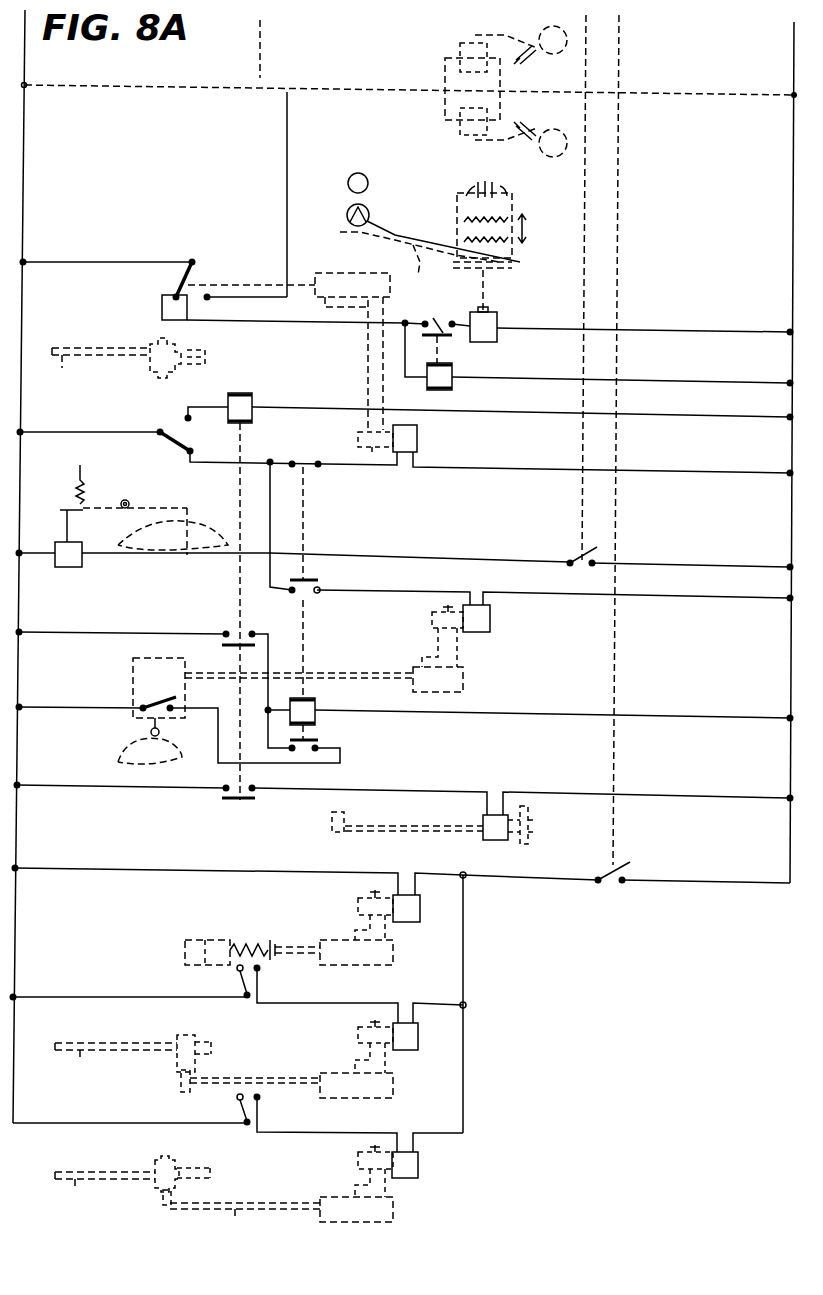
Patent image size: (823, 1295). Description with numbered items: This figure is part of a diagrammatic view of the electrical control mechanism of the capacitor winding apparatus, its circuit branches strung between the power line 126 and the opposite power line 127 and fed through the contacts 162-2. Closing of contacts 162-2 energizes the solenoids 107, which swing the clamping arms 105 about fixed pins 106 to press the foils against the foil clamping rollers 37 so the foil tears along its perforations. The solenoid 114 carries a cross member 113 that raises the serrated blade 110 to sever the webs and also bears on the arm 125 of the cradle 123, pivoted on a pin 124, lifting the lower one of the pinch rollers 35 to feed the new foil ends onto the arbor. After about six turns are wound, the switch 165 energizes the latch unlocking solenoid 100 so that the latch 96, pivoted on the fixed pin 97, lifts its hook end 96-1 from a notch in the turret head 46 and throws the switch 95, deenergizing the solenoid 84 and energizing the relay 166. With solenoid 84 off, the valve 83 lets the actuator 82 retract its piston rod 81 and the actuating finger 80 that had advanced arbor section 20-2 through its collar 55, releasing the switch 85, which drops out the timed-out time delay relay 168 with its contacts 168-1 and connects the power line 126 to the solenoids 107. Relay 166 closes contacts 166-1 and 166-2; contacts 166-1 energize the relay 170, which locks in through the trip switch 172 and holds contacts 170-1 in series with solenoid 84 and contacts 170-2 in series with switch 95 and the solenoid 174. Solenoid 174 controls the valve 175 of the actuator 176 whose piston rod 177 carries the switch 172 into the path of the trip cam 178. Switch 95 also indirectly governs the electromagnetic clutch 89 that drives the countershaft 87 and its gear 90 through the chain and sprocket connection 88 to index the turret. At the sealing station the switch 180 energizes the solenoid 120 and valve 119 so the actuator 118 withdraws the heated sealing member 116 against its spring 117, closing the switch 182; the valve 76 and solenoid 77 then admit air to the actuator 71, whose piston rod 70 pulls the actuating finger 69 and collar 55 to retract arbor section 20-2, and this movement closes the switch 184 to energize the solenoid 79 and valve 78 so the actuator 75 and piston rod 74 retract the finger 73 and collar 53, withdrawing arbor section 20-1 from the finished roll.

The power line 126 is at (25, 72).
The power supply line 127 is at (794, 50).
The contacts 162-2 is at (270, 78).
The solenoids 107 is at (460, 56).
The fixed pins 106 is at (512, 32).
The clamping arms 105 is at (537, 93).
The foil clamping rollers 37 is at (567, 42).
The pinch rollers 35 is at (368, 183).
The pin 124 is at (345, 222).
The cradle 123 is at (355, 236).
The arm 125 is at (434, 272).
The blade 110 is at (510, 253).
The cross member 113 is at (500, 270).
The solenoid 114 is at (497, 317).
The time delay contact 168-1 is at (434, 329).
The time delay relay 168 is at (452, 380).
The switch 85 is at (178, 282).
The actuating finger 80 is at (187, 309).
The piston rod 81 is at (268, 284).
The actuator 82 is at (346, 273).
The arbor section 20-2 is at (82, 347).
The arbor section 20-1 is at (72, 1192).
The collar 53 is at (148, 374).
The collar 55 is at (200, 373).
The relay 166 is at (254, 402).
The switch 95 is at (188, 446).
The valve 83 is at (358, 438).
The solenoid 84 is at (417, 440).
The contacts 170-1 is at (318, 470).
The latch 96 is at (100, 506).
The fixed pin 97 is at (132, 505).
The turret head 46 is at (213, 527).
The latch unlocking solenoid 100 is at (70, 567).
The hook end 96-1 is at (197, 547).
The switch 165 is at (572, 560).
The contacts 170-2 is at (313, 576).
The solenoid 174 is at (490, 620).
The valve 175 is at (432, 620).
The actuator 176 is at (463, 685).
The piston rod 177 is at (325, 676).
The trip switch 172 is at (143, 700).
The trip cam 178 is at (140, 738).
The relay 170 is at (315, 720).
The contacts 166-1 is at (238, 630).
The contacts 166-2 is at (244, 803).
The countershaft 87 is at (380, 822).
The chain and sprocket connection 88 is at (535, 838).
The electromagnetic clutch 89 is at (483, 838).
The gear 90 is at (332, 835).
The switch 180 is at (622, 866).
The solenoid 120 is at (410, 922).
The valve 119 is at (358, 906).
The actuator 118 is at (330, 966).
The sealing member 116 is at (185, 945).
The spring 117 is at (250, 940).
The switch 182 is at (238, 984).
The solenoid 77 is at (418, 1040).
The valve 76 is at (358, 1034).
The actuator 71 is at (345, 1098).
The piston rod 70 is at (280, 1077).
The actuating finger 69 is at (180, 1078).
The switch 184 is at (240, 1110).
The solenoid 79 is at (418, 1168).
The valve 78 is at (358, 1160).
The actuator 75 is at (345, 1222).
The piston rod 74 is at (236, 1215).
The actuating finger 73 is at (160, 1200).